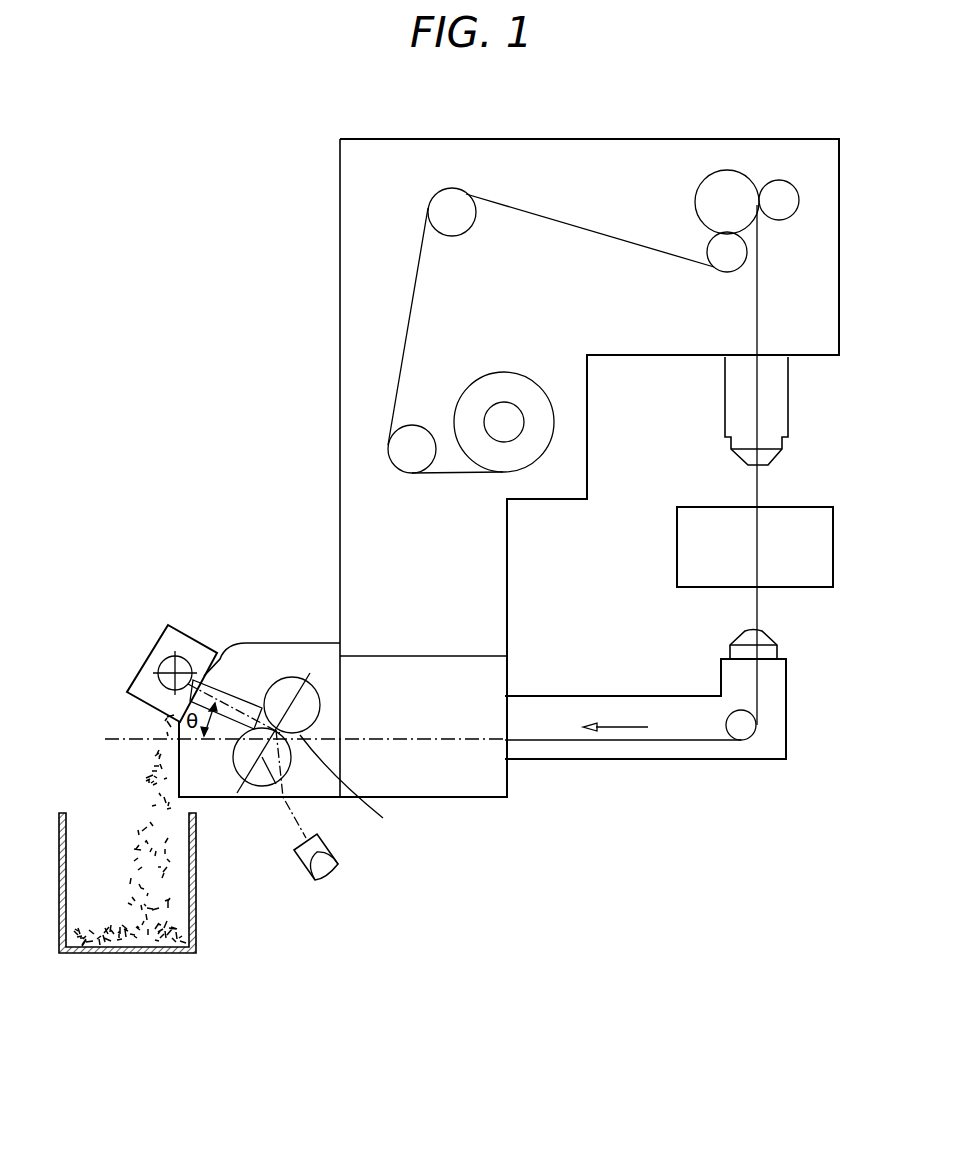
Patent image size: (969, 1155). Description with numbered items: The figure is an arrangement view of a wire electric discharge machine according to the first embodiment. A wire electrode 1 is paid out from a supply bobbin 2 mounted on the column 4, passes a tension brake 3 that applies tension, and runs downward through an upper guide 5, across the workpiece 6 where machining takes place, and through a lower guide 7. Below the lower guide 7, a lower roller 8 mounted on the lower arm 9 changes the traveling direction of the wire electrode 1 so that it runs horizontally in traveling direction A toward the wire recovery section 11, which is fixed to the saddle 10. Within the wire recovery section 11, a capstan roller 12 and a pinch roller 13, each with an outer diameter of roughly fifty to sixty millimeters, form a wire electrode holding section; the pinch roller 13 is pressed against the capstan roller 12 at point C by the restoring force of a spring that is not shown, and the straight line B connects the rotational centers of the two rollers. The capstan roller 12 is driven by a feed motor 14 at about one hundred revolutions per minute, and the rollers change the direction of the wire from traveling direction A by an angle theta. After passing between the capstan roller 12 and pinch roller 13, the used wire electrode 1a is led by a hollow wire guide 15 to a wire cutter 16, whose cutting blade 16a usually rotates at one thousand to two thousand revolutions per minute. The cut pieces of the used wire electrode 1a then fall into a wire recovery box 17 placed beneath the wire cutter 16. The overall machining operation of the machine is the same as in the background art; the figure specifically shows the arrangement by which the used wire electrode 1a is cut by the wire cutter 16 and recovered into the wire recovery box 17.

The wire electrode 1 is at (404, 250).
The used wire electrode 1a is at (758, 605).
The supply bobbin 2 is at (470, 397).
The tension brake 3 is at (726, 172).
The column 4 is at (350, 309).
The upper guide 5 is at (772, 457).
The workpiece 6 is at (833, 545).
The lower guide 7 is at (777, 640).
The lower roller 8 is at (745, 727).
The lower arm 9 is at (614, 760).
The saddle 10 is at (455, 797).
The wire recovery section 11 is at (327, 797).
The capstan roller 12 is at (235, 780).
The pinch roller 13 is at (313, 693).
The feed motor 14 is at (322, 870).
The hollow wire guide 15 is at (244, 698).
The wire cutter 16 is at (177, 628).
The cutting blade 16a is at (168, 662).
The wire recovery box 17 is at (197, 920).
The traveling direction A is at (615, 718).
The straight line B is at (312, 677).
The pressure contact point C is at (351, 783).